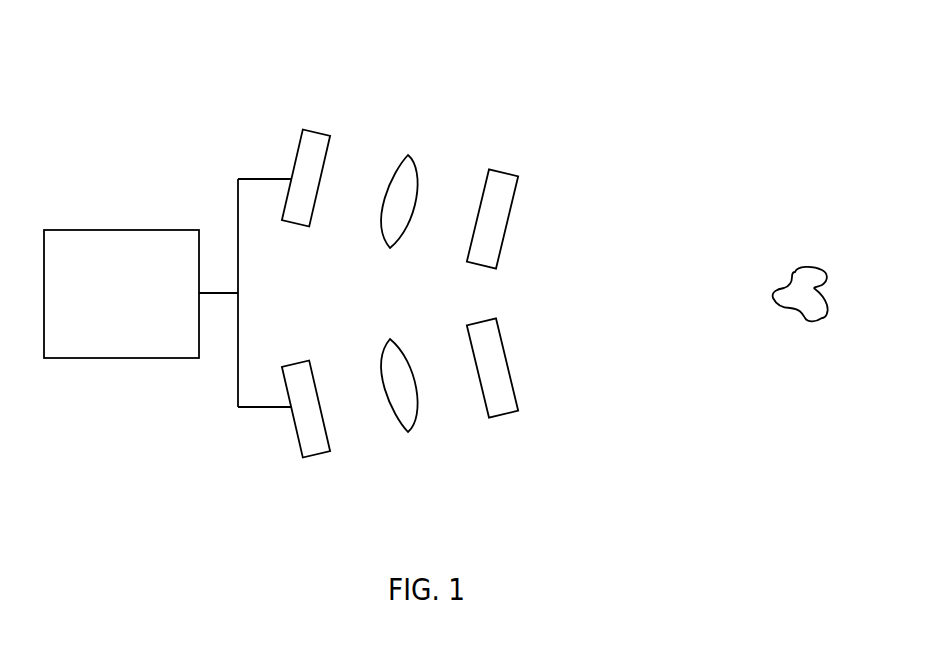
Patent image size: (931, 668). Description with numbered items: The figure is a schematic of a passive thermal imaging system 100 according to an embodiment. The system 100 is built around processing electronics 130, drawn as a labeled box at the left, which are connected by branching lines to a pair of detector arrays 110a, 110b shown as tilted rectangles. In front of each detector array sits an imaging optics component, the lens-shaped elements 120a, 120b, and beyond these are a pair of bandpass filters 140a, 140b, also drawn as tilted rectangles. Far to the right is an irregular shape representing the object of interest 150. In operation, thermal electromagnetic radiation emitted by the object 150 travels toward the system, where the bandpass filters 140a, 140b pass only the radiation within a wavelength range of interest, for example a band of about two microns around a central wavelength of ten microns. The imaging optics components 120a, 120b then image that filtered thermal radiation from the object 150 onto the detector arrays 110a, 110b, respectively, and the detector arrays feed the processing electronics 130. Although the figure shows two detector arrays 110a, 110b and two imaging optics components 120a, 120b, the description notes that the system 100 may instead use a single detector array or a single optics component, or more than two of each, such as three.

The passive thermal imaging system 100 is at (468, 73).
The detector array 110a is at (316, 448).
The detector array 110b is at (316, 139).
The imaging optics component 120a is at (408, 431).
The imaging optics component 120b is at (409, 156).
The processing electronics 130 is at (117, 241).
The bandpass filter 140a is at (500, 409).
The bandpass filter 140b is at (500, 179).
The object of interest 150 is at (806, 271).